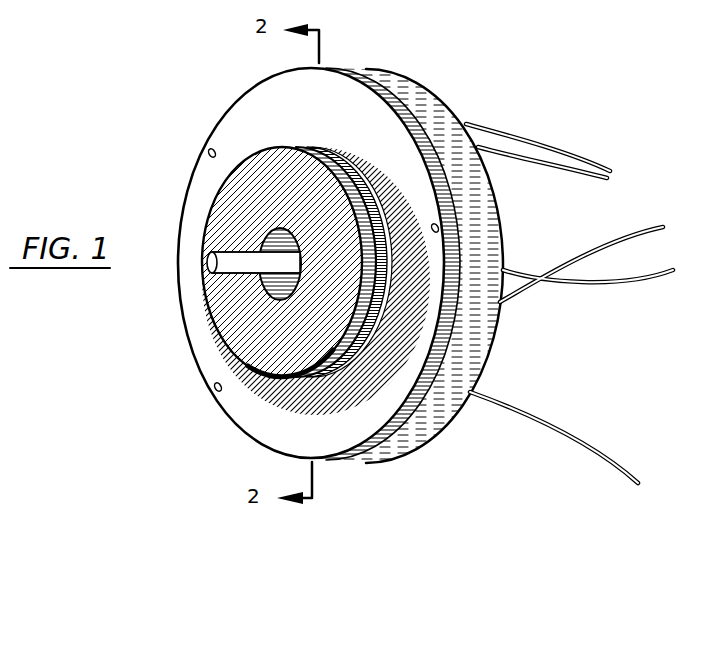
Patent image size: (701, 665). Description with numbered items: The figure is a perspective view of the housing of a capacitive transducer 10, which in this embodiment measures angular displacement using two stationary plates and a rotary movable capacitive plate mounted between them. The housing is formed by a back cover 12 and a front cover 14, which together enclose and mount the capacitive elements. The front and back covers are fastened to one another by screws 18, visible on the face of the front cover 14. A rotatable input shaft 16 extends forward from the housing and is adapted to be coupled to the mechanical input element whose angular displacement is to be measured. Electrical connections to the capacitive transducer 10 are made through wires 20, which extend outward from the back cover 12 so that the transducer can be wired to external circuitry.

The capacitive transducer 10 is at (380, 72).
The back cover 12 is at (447, 115).
The front cover 14 is at (247, 93).
The rotatable input shaft 16 is at (297, 262).
The screws 18 is at (211, 156).
The wires 20 is at (632, 233).